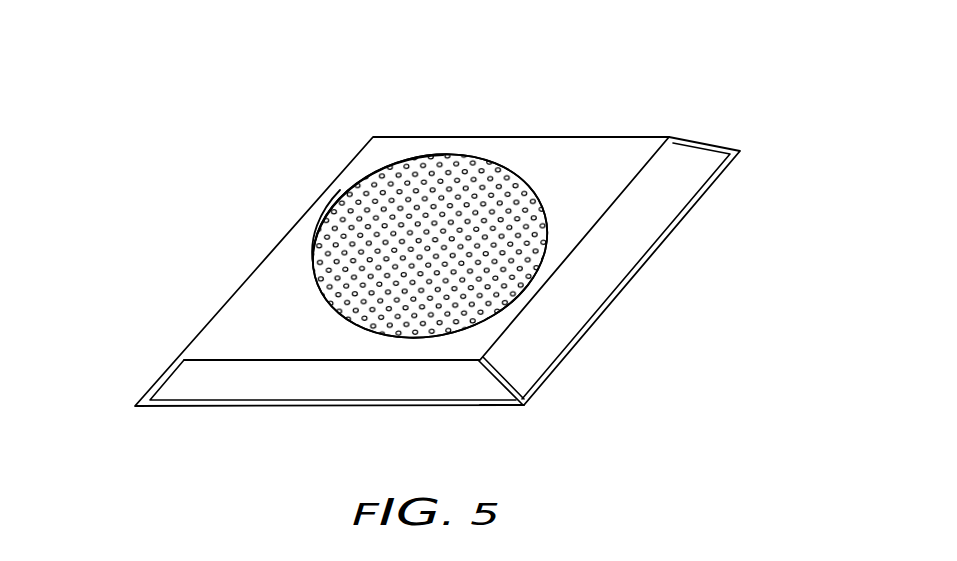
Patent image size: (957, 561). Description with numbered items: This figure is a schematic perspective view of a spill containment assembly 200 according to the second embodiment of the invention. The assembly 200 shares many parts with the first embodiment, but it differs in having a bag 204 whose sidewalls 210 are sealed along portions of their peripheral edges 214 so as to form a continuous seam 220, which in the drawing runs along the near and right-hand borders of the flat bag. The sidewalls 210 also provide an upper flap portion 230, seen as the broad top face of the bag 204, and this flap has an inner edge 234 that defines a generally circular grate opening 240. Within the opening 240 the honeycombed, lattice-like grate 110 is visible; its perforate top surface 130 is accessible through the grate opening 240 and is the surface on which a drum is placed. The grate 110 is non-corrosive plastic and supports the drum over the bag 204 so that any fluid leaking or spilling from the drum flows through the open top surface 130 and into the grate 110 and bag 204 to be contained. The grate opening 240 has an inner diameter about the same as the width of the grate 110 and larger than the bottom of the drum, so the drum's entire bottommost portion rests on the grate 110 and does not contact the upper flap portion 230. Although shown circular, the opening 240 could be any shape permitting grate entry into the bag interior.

The spill containment assembly 200 is at (441, 259).
The bag 204 is at (645, 266).
The sidewalls 210 is at (228, 348).
The peripheral edges 214 is at (502, 372).
The continuous seam 220 is at (502, 372).
The upper flap portion 230 is at (265, 322).
The inner edge 234 is at (324, 238).
The grate opening 240 is at (364, 198).
The top surface 130 is at (455, 175).
The grate 110 is at (478, 175).